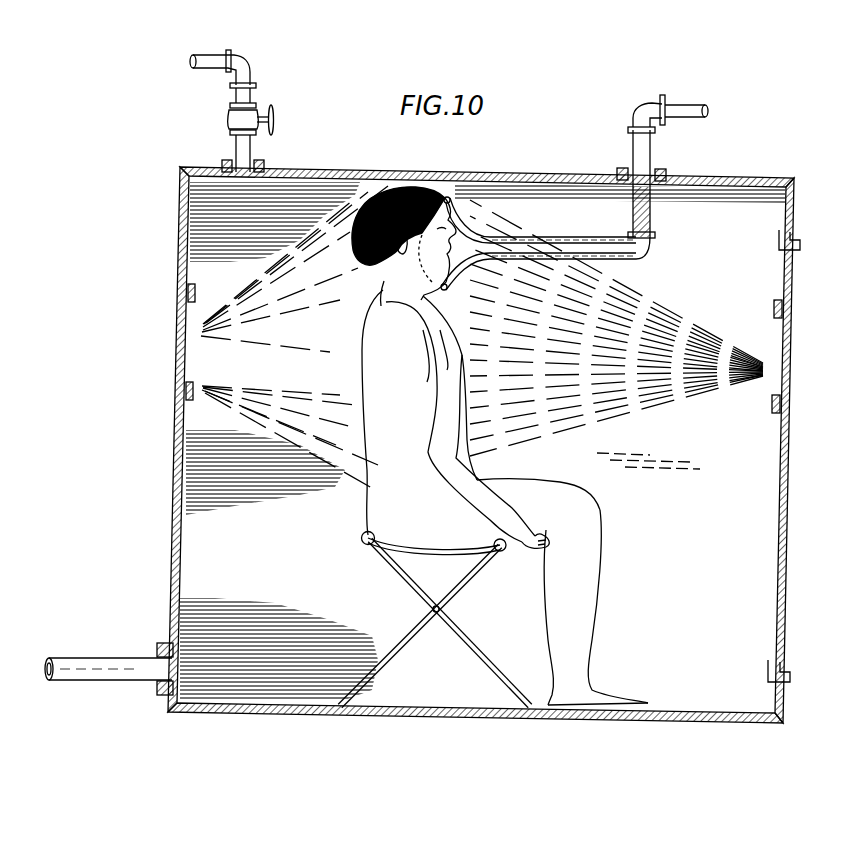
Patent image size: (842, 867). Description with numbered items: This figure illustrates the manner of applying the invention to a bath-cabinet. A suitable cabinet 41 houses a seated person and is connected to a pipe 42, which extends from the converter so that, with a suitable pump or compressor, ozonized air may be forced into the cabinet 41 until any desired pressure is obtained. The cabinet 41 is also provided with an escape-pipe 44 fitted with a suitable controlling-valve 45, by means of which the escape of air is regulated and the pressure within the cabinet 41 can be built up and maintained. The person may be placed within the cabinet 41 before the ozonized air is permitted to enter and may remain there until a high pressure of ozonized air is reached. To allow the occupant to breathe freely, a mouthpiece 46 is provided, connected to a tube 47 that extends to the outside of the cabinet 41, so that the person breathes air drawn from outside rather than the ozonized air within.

The cabinet 41 is at (173, 463).
The pipe 42 is at (81, 667).
The escape-pipe 44 is at (243, 94).
The controlling-valve 45 is at (275, 121).
The mouthpiece 46 is at (537, 237).
The tube 47 is at (650, 209).